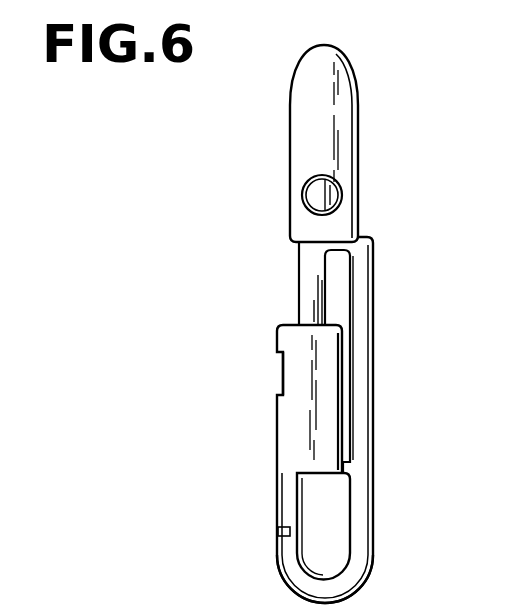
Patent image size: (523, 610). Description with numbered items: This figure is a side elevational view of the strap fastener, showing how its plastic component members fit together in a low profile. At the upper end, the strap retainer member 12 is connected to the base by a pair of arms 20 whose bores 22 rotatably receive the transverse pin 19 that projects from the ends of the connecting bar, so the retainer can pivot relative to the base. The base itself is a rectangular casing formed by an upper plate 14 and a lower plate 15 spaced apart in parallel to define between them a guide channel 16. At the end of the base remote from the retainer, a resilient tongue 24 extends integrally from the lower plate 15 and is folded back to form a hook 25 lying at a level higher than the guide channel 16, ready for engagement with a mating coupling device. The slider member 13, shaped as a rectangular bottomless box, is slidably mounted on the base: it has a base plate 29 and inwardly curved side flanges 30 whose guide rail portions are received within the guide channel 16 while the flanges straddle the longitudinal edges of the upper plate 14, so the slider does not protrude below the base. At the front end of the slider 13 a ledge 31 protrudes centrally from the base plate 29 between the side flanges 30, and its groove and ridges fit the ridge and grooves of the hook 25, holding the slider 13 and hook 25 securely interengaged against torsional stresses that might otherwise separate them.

The strap retainer member 12 is at (355, 60).
The arm 20 is at (356, 97).
The transverse pin 19 is at (310, 197).
The bore 22 is at (340, 196).
The guide channel 16 is at (326, 262).
The upper plate 14 is at (299, 300).
The lower plate 15 is at (372, 301).
The slider member 13 is at (275, 338).
The side flange 30 is at (340, 398).
The base plate 29 is at (277, 420).
The ledge 31 is at (284, 494).
The hook 25 is at (278, 533).
The resilient tongue 24 is at (283, 578).